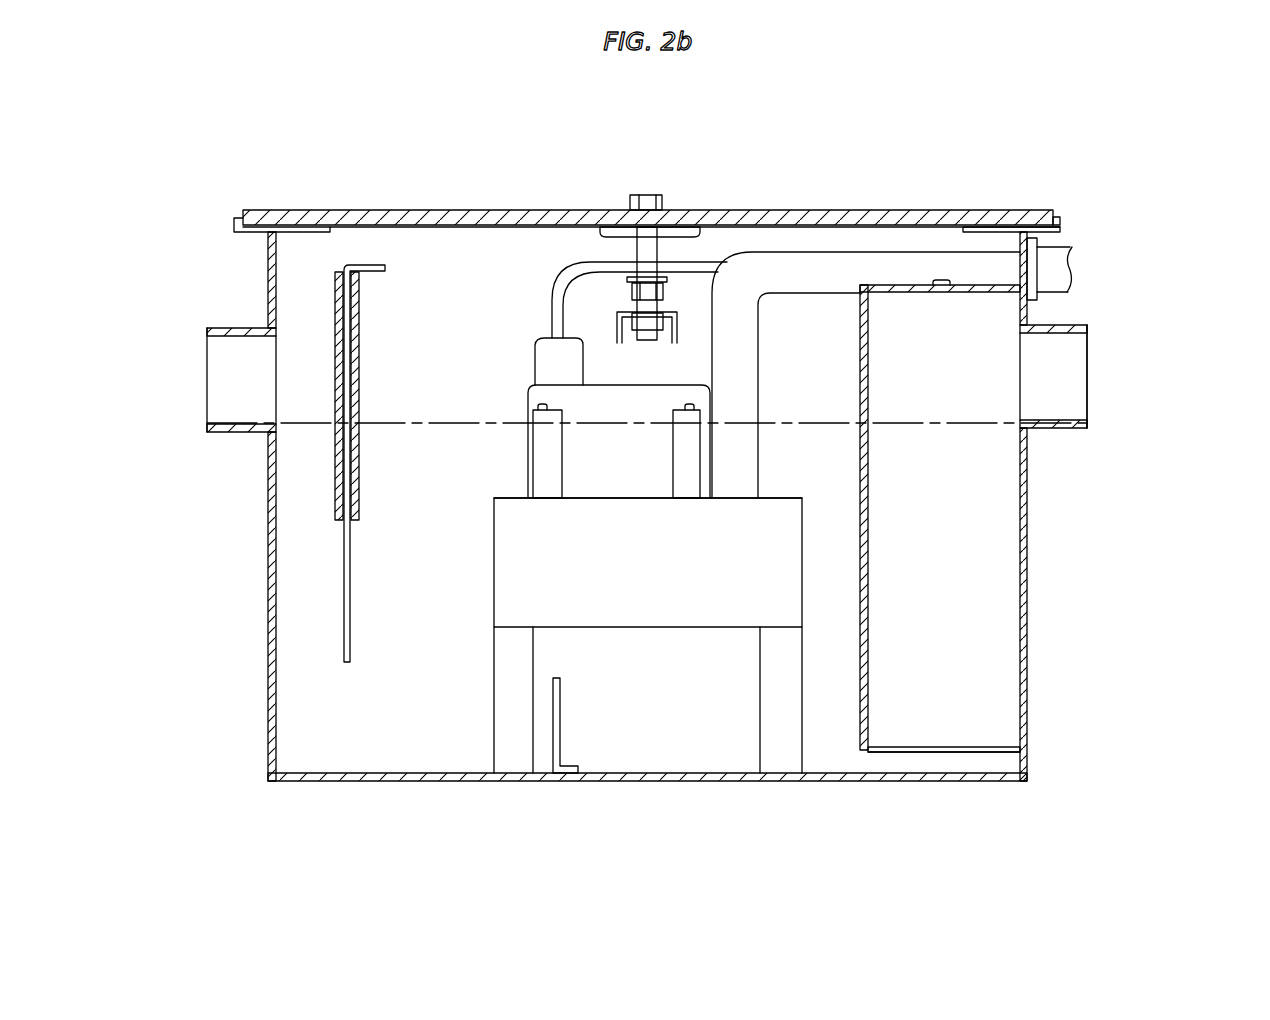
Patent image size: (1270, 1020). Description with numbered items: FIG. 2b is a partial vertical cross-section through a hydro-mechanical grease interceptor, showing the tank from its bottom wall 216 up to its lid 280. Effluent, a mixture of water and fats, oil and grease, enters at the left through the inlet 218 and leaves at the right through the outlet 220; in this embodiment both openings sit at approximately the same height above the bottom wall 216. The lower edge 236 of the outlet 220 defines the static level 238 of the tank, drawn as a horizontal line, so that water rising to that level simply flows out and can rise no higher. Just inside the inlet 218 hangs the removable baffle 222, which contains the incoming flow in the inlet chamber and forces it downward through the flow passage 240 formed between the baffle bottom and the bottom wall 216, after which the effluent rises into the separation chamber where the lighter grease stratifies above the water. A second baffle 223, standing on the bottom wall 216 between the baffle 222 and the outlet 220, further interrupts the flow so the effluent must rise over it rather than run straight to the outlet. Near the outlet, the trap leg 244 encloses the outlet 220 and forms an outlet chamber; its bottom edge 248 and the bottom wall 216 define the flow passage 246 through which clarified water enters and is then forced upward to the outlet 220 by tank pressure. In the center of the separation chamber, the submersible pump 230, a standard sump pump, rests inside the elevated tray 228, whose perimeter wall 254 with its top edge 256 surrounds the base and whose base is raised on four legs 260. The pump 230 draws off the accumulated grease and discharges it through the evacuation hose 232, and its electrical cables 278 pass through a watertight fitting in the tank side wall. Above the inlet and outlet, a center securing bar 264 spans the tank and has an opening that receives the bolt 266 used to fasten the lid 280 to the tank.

The bottom wall 216 is at (283, 774).
The inlet 218 is at (207, 434).
The outlet 220 is at (1062, 375).
The baffle 222 is at (340, 573).
The second baffle 223 is at (560, 740).
The elevated tray 228 is at (508, 497).
The submersible pump 230 is at (537, 337).
The evacuation hose 232 is at (1057, 243).
The lower edge 236 is at (1087, 430).
The static level 238 is at (957, 425).
The flow passage 240 is at (357, 709).
The trap leg 244 is at (940, 515).
The flow passage 246 is at (997, 760).
The bottom edge 248 is at (935, 752).
The perimeter wall 254 is at (648, 515).
The top edge 256 is at (617, 498).
The legs 260 is at (512, 740).
The center securing bar 264 is at (680, 327).
The bolt 266 is at (646, 195).
The electrical cables 278 is at (560, 300).
The lid 280 is at (680, 305).